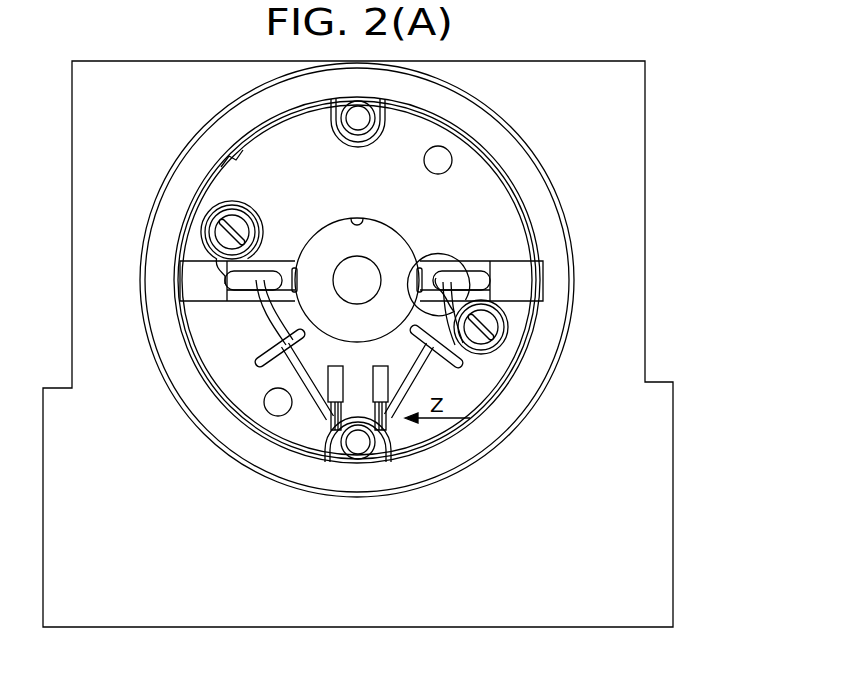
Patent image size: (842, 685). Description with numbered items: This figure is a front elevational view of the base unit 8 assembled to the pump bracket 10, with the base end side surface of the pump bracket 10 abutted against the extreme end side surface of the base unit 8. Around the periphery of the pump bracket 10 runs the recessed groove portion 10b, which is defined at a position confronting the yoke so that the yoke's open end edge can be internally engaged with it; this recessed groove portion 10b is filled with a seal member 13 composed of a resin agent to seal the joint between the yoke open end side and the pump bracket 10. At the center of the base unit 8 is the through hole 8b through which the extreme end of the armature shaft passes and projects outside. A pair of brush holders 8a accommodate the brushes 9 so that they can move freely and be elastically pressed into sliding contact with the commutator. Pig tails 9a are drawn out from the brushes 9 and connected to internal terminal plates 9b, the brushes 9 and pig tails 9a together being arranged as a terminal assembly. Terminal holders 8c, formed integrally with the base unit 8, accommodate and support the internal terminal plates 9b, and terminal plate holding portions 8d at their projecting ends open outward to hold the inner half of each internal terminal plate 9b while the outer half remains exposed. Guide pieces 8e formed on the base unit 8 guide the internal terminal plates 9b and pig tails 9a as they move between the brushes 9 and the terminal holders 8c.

The base unit 8 is at (281, 170).
The brush holder 8a is at (468, 262).
The through hole 8b is at (360, 217).
The terminal holder 8c is at (378, 380).
The terminal plate holding portion 8d is at (358, 455).
The guide piece 8e is at (262, 305).
The brush 9 is at (445, 268).
The pig tail 9a is at (420, 366).
The internal terminal plate 9b is at (383, 420).
The pump bracket 10 is at (630, 173).
The recessed groove portion 10b is at (560, 260).
The seal member 13 is at (575, 287).